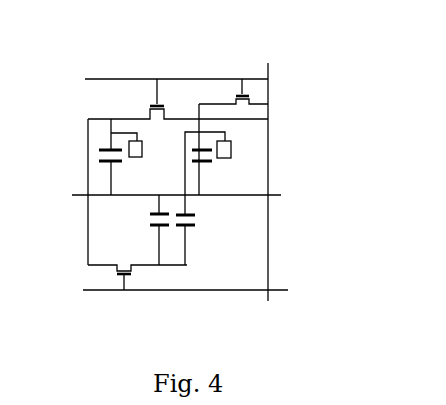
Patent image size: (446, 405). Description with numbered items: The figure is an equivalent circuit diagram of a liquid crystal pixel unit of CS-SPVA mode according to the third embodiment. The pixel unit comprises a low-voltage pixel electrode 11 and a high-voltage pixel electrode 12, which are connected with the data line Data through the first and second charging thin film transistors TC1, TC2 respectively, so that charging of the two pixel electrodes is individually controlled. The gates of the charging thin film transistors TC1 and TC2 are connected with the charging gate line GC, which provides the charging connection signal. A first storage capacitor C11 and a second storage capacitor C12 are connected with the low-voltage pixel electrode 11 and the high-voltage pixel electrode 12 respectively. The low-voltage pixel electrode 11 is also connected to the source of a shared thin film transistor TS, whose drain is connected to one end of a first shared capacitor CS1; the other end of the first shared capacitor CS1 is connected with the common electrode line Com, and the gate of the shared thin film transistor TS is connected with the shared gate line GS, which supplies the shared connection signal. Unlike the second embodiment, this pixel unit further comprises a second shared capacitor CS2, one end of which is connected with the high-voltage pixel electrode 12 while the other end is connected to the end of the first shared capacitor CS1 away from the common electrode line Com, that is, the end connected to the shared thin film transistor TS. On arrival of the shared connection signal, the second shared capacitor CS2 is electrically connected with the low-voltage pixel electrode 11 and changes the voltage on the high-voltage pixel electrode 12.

The charging gate line GC is at (276, 79).
The data line Data is at (270, 222).
The common electrode line Com is at (280, 195).
The shared gate line GS is at (281, 290).
The first charging thin film transistor TC1 is at (149, 109).
The second charging thin film transistor TC2 is at (234, 97).
The first storage capacitor C11 is at (98, 161).
The second storage capacitor C12 is at (190, 160).
The low-voltage pixel electrode 11 is at (139, 157).
The high-voltage pixel electrode 12 is at (230, 158).
The first shared capacitor CS1 is at (149, 222).
The second shared capacitor CS2 is at (197, 221).
The shared thin film transistor TS is at (133, 272).